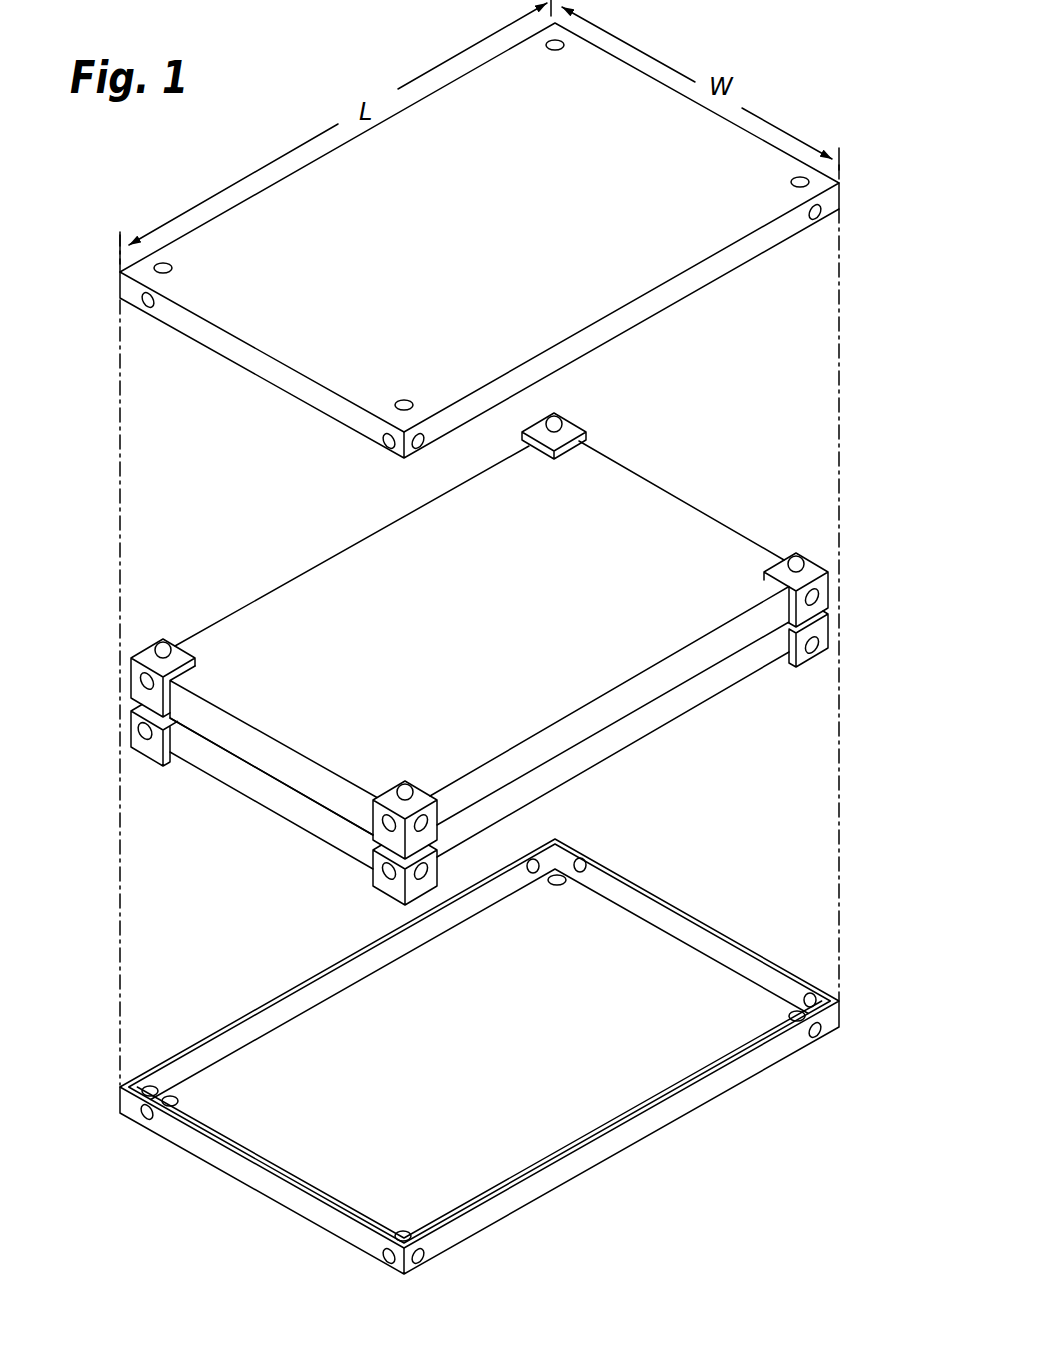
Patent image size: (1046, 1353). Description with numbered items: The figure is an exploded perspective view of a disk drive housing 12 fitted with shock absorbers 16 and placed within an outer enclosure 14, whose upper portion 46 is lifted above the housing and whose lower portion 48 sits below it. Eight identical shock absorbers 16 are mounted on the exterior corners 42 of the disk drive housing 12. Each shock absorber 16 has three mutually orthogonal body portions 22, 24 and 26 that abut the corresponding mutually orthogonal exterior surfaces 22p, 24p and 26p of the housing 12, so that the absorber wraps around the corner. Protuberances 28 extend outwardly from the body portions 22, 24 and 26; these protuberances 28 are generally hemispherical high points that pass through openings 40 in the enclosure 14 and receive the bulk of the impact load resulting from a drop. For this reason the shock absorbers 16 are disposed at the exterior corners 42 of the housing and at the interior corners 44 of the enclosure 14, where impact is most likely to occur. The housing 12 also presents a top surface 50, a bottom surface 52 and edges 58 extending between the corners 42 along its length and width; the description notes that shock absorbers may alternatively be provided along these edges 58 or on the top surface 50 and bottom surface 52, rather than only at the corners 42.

The disk drive housing 12 is at (483, 681).
The enclosure 14 is at (668, 316).
The shock absorber 16 is at (540, 452).
The body portion 22 is at (368, 815).
The exterior surface 22p is at (290, 757).
The body portion 24 is at (452, 850).
The exterior surface 24p is at (547, 750).
The body portion 26 is at (420, 792).
The exterior surface 26p is at (401, 774).
The protuberance 28 is at (558, 435).
The opening 40 is at (559, 50).
The exterior corner 42 is at (588, 458).
The interior corner 44 is at (549, 862).
The upper portion 46 is at (337, 336).
The lower portion 48 is at (243, 1170).
The top surface 50 is at (448, 561).
The bottom surface 52 is at (668, 748).
The edge 58 is at (688, 493).